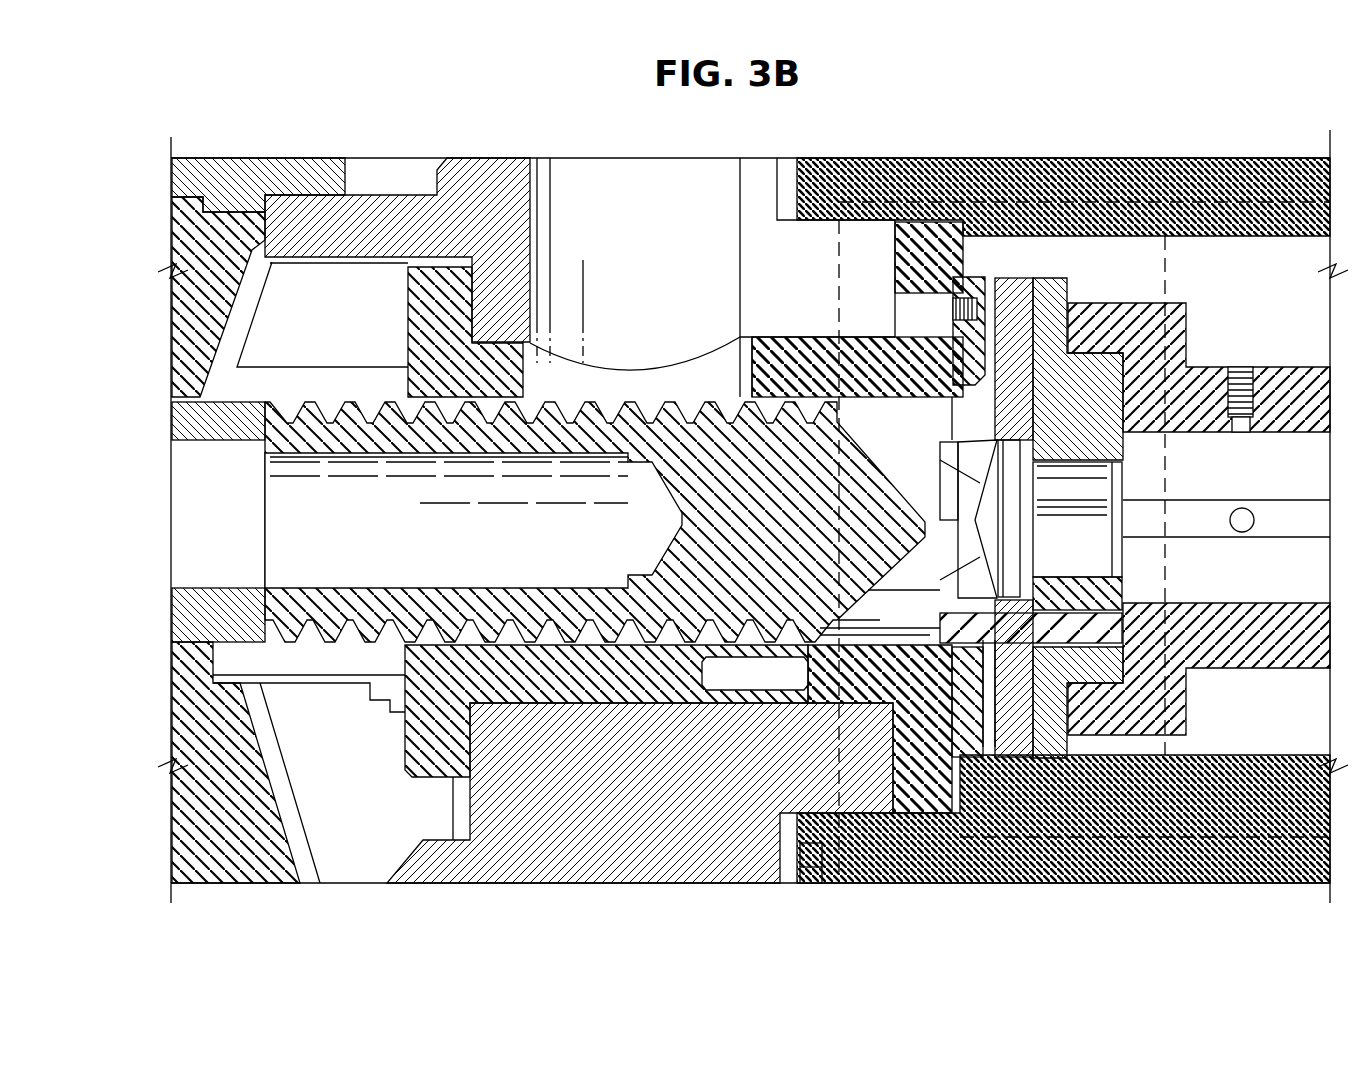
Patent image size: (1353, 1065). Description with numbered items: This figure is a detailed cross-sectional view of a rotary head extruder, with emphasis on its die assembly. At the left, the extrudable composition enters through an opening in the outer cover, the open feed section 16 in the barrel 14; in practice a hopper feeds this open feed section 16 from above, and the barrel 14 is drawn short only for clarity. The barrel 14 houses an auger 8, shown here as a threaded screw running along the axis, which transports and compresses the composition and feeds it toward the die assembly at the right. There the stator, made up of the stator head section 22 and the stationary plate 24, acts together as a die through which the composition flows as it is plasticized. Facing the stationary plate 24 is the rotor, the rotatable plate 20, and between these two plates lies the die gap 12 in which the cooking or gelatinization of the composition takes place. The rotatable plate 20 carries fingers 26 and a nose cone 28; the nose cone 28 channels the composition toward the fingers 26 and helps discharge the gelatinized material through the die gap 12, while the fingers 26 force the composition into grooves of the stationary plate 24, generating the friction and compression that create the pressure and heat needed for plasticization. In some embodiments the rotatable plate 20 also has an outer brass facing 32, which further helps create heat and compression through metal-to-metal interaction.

The auger 8 is at (578, 403).
The die gap 12 is at (972, 790).
The barrel 14 is at (672, 157).
The open feed section 16 is at (592, 172).
The rotatable plate 20 is at (990, 770).
The stator head section 22 is at (985, 700).
The stationary plate 24 is at (953, 718).
The fingers 26 is at (952, 510).
The nose cone 28 is at (960, 470).
The outer brass facing 32 is at (960, 330).